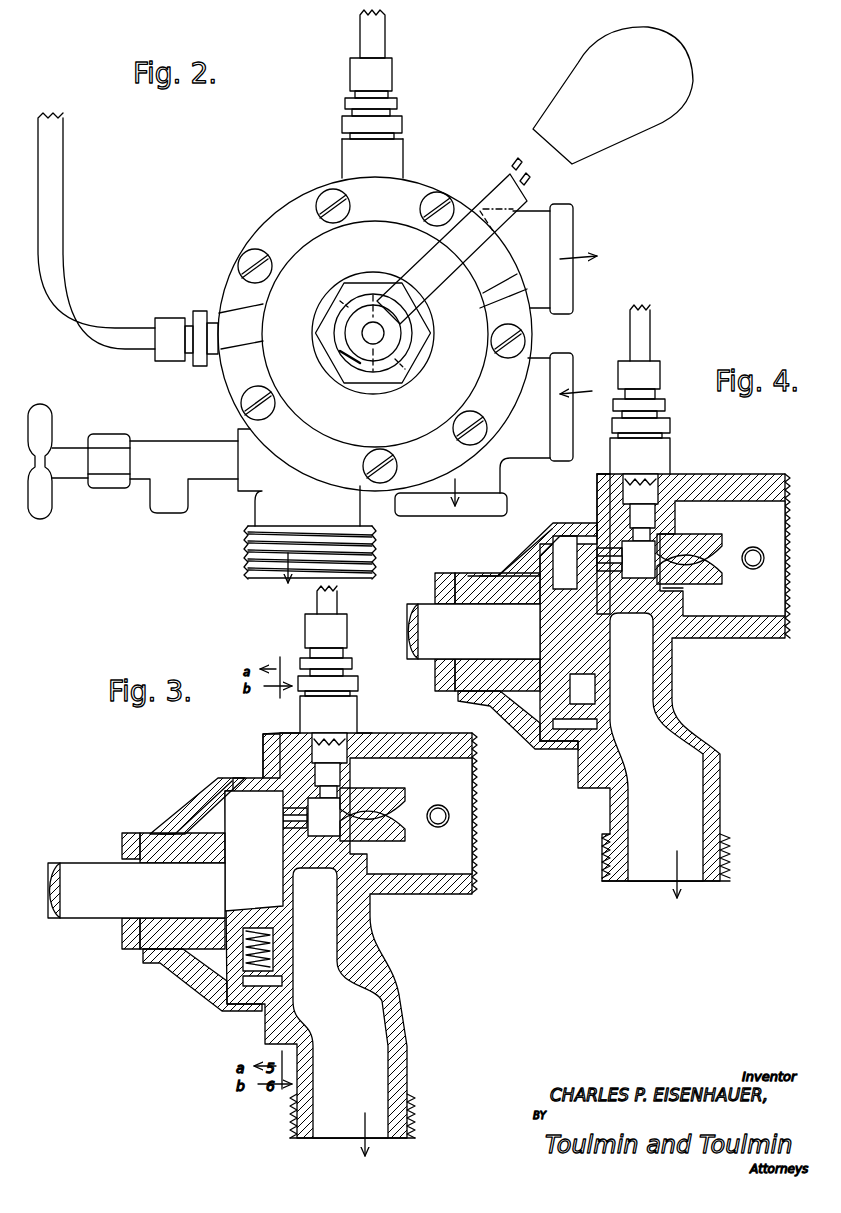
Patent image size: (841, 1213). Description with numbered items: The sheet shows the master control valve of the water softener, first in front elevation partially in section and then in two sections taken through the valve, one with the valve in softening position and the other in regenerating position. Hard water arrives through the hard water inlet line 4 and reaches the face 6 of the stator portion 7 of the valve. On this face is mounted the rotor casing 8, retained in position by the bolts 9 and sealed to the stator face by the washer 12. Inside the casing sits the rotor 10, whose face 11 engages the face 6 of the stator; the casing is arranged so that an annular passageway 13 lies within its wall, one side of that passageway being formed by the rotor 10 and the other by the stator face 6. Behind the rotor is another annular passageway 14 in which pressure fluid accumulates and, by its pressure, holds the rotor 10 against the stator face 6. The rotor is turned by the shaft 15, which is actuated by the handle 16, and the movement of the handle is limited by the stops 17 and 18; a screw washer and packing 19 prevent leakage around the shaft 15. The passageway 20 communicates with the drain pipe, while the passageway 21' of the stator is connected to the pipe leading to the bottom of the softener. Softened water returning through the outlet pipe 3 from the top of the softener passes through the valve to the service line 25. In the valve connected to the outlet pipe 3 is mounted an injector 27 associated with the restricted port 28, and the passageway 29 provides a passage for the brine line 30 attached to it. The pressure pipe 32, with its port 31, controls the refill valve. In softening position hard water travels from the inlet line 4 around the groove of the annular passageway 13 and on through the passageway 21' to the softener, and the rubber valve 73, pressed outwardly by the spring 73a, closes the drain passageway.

In FIG. 2, the outlet pipe 3 is at (373, 190).
In FIG. 3, the outlet pipe 3 is at (468, 860).
In FIG. 4, the outlet pipe 3 is at (788, 486).
In FIG. 2, the hard water inlet line 4 is at (571, 362).
In FIG. 3, the face 6 is at (297, 740).
In FIG. 4, the face 6 is at (662, 595).
In FIG. 3, the stator portion 7 is at (280, 744).
In FIG. 4, the stator portion 7 is at (603, 478).
In FIG. 2, the rotor casing 8 is at (280, 207).
In FIG. 3, the rotor casing 8 is at (210, 800).
In FIG. 4, the rotor casing 8 is at (520, 550).
In FIG. 2, the bolts 9 is at (326, 216).
In FIG. 3, the rotor 10 is at (240, 785).
In FIG. 4, the rotor 10 is at (560, 532).
In FIG. 3, the face 11 is at (283, 837).
In FIG. 4, the face 11 is at (597, 577).
In FIG. 3, the washer 12 is at (283, 1007).
In FIG. 4, the washer 12 is at (600, 748).
In FIG. 3, the annular passageway 13 is at (283, 805).
In FIG. 4, the annular passageway 13 is at (595, 548).
In FIG. 3, the annular passageway 14 is at (213, 952).
In FIG. 4, the annular passageway 14 is at (523, 567).
In FIG. 2, the shaft 15 is at (378, 305).
In FIG. 3, the shaft 15 is at (80, 862).
In FIG. 4, the shaft 15 is at (425, 605).
In FIG. 2, the handle 16 is at (530, 150).
In FIG. 2, the stop 17 is at (483, 300).
In FIG. 2, the stop 18 is at (213, 305).
In FIG. 2, the screw washer and packing 19 is at (345, 298).
In FIG. 3, the screw washer and packing 19 is at (133, 832).
In FIG. 4, the screw washer and packing 19 is at (445, 572).
In FIG. 2, the passageway 20 is at (421, 505).
In FIG. 2, the passageway 21' is at (293, 554).
In FIG. 3, the passageway 21' is at (341, 1142).
In FIG. 4, the passageway 21' is at (646, 886).
In FIG. 2, the service line 25 is at (565, 220).
In FIG. 3, the injector 27 is at (405, 793).
In FIG. 4, the injector 27 is at (700, 540).
In FIG. 3, the restricted port 28 is at (308, 815).
In FIG. 4, the restricted port 28 is at (610, 557).
In FIG. 3, the passageway 29 is at (337, 745).
In FIG. 4, the passageway 29 is at (645, 487).
In FIG. 2, the brine line 30 is at (360, 33).
In FIG. 3, the brine line 30 is at (317, 600).
In FIG. 4, the brine line 30 is at (650, 333).
In FIG. 3, the port 31 is at (450, 815).
In FIG. 4, the port 31 is at (755, 547).
In FIG. 2, the pressure pipe 32 is at (60, 178).
In FIG. 3, the rubber valve 73 is at (276, 950).
In FIG. 3, the spring 73a is at (255, 992).